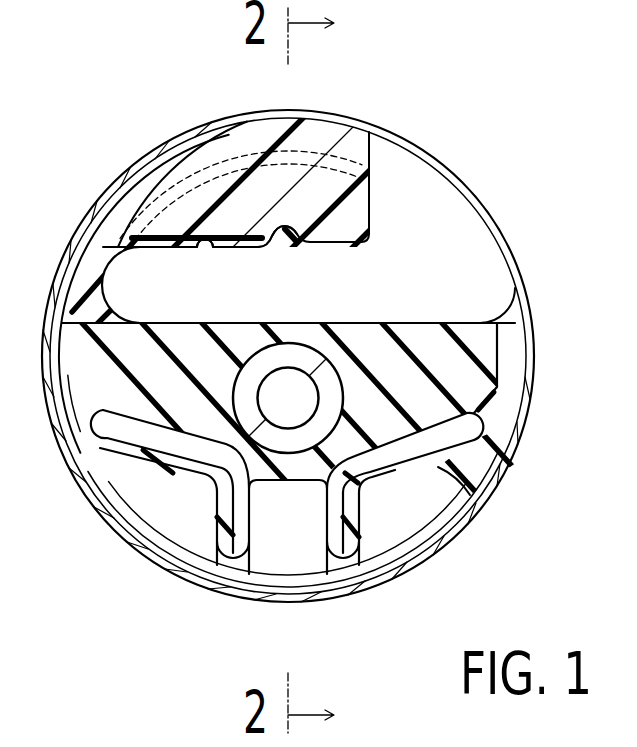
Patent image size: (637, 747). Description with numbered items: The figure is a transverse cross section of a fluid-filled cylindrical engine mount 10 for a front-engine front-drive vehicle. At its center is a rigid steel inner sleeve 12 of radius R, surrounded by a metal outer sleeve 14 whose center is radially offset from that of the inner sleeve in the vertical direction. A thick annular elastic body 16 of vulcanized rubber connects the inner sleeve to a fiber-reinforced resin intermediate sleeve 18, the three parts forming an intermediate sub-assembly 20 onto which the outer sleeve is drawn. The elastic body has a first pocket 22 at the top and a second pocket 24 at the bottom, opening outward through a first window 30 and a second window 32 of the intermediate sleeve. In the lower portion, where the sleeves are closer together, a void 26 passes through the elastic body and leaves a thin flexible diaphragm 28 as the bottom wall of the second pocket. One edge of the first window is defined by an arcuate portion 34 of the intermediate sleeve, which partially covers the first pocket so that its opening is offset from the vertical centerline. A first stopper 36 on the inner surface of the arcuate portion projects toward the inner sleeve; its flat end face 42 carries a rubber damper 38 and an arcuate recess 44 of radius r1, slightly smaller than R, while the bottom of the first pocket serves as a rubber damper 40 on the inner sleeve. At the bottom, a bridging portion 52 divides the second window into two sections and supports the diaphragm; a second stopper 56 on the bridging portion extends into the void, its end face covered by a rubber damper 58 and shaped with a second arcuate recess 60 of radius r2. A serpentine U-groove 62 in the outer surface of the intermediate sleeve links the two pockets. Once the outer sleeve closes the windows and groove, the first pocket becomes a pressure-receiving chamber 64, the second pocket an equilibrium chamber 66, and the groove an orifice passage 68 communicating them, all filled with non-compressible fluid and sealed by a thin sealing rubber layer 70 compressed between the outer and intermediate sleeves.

The fluid-filled cylindrical engine mount 10 is at (166, 62).
The inner sleeve 12 is at (338, 326).
The outer sleeve 14 is at (497, 229).
The elastic body 16 is at (418, 388).
The intermediate sleeve 18 is at (505, 422).
The intermediate sub-assembly 20 is at (347, 112).
The first pocket 22 is at (506, 306).
The second pocket 24 is at (442, 467).
The void 26 is at (132, 517).
The flexible diaphragm 28 is at (392, 470).
The first window 30 is at (532, 318).
The second window 32 is at (97, 452).
The arcuate portion 34 is at (306, 134).
The first stopper 36 is at (355, 212).
The rubber damper 38 is at (321, 244).
The rubber damper 40 is at (291, 328).
The end face 42 is at (198, 234).
The arcuate recess 44 is at (300, 235).
The bridging portion 52 is at (333, 562).
The second stopper 56 is at (96, 424).
The rubber damper 58 is at (283, 482).
The second arcuate recess 60 is at (327, 497).
The U-groove 62 is at (127, 210).
The pressure-receiving chamber 64 is at (420, 230).
The equilibrium chamber 66 is at (127, 515).
The orifice passage 68 is at (80, 232).
The sealing rubber layer 70 is at (527, 396).
The radius of the inner sleeve R is at (271, 356).
The radius of arc of the arcuate recess r1 is at (280, 238).
The radius of arc of the second arcuate recess r2 is at (288, 400).